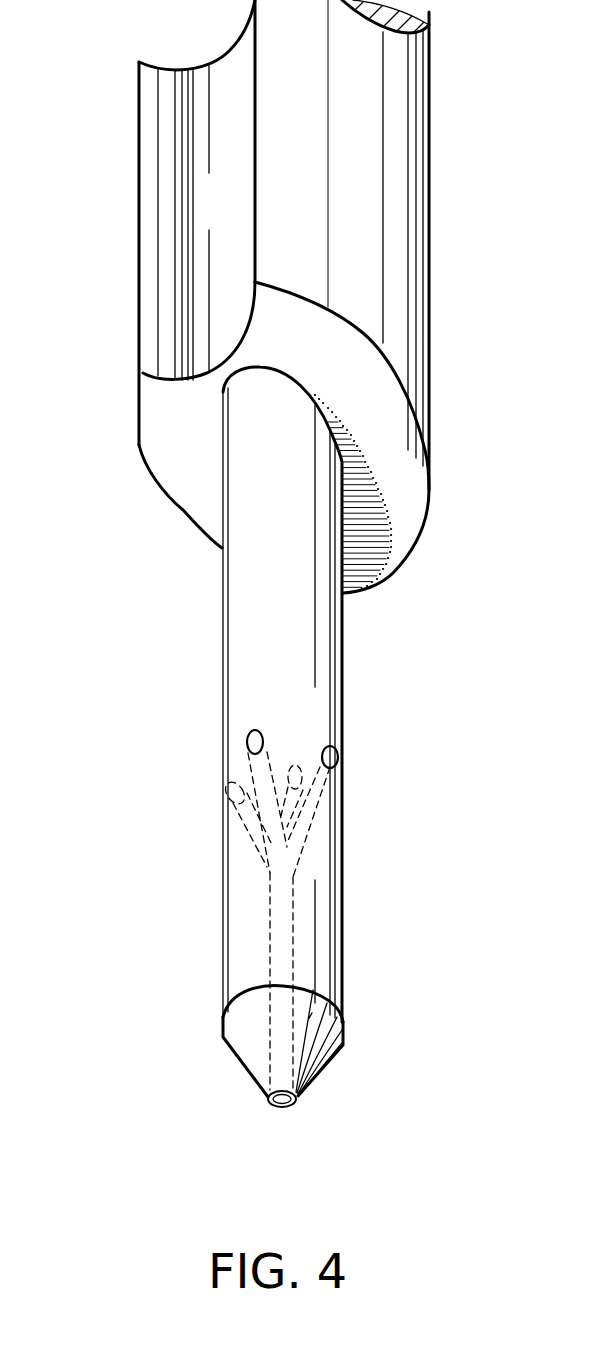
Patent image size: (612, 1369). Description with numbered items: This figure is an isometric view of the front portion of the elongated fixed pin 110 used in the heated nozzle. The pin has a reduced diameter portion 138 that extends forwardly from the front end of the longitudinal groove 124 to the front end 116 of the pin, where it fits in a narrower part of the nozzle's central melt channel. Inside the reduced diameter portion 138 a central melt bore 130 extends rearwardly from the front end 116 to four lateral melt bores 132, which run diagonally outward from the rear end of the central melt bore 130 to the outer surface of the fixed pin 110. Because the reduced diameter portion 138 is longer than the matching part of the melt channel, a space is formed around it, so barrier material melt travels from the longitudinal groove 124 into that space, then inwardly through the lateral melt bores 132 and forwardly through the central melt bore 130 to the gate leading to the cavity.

The fixed pin 110 is at (393, 235).
The longitudinal groove 124 is at (168, 252).
The reduced diameter portion 138 is at (297, 703).
The lateral melt bores 132 is at (248, 823).
The central melt bore 130 is at (282, 943).
The front end 116 is at (296, 1105).